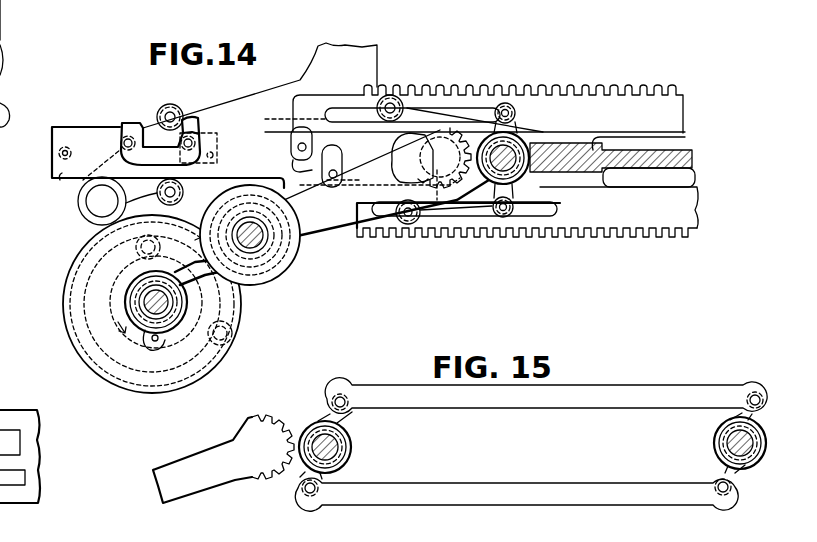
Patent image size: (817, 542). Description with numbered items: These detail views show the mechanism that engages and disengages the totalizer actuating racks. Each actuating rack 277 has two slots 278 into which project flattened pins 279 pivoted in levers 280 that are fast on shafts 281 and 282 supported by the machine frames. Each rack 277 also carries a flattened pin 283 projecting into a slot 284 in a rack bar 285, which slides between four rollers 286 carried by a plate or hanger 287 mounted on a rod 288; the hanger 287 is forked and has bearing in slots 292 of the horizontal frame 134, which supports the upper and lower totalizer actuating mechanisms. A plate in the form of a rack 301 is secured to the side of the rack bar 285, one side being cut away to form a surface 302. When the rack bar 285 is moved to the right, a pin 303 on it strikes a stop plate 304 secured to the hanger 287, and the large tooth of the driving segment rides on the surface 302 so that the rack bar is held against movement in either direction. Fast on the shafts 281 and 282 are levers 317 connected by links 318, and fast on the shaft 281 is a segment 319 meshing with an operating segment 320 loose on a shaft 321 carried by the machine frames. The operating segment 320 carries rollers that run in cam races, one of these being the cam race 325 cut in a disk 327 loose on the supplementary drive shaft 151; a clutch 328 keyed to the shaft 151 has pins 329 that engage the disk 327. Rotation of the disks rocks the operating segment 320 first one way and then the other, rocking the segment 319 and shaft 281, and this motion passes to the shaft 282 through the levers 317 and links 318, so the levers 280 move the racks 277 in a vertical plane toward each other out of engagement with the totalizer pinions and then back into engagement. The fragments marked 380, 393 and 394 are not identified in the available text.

In FIG. 14, the horizontal frame 134 is at (656, 156).
In FIG. 14, the supplementary drive shaft 151 is at (143, 296).
In FIG. 14, the actuating rack 277 is at (634, 96).
In FIG. 14, the slot 278 is at (453, 112).
In FIG. 14, the flattened pin 279 is at (516, 116).
In FIG. 14, the lever 280 is at (505, 220).
In FIG. 14, the shaft 281 is at (523, 158).
In FIG. 15, the shaft 281 is at (342, 447).
In FIG. 15, the shaft 282 is at (733, 438).
In FIG. 14, the flattened pin 283 is at (291, 140).
In FIG. 14, the slot 284 is at (296, 167).
In FIG. 14, the rack bar 285 is at (58, 179).
In FIG. 14, the roller 286 is at (170, 105).
In FIG. 14, the plate or hanger 287 is at (316, 62).
In FIG. 14, the rod 288 is at (98, 208).
In FIG. 14, the slot 292 is at (607, 214).
In FIG. 14, the rack 301 is at (122, 123).
In FIG. 14, the surface 302 is at (188, 124).
In FIG. 14, the pin 303 is at (59, 153).
In FIG. 14, the stop plate 304 is at (214, 153).
In FIG. 15, the lever 317 is at (325, 413).
In FIG. 15, the link 318 is at (483, 403).
In FIG. 14, the segment 319 is at (463, 217).
In FIG. 15, the segment 319 is at (293, 427).
In FIG. 14, the operating segment 320 is at (318, 247).
In FIG. 15, the operating segment 320 is at (250, 484).
In FIG. 14, the shaft 321 is at (268, 268).
In FIG. 14, the cam race 325 is at (103, 259).
In FIG. 14, the disk 327 is at (68, 317).
In FIG. 14, the clutch 328 is at (152, 348).
In FIG. 14, the pin 329 is at (167, 246).
In FIG. 14, the housing 380 is at (0, 34).
In FIG. 14, the guide 393 is at (0, 398).
In FIG. 14, the guide slot 394 is at (21, 464).